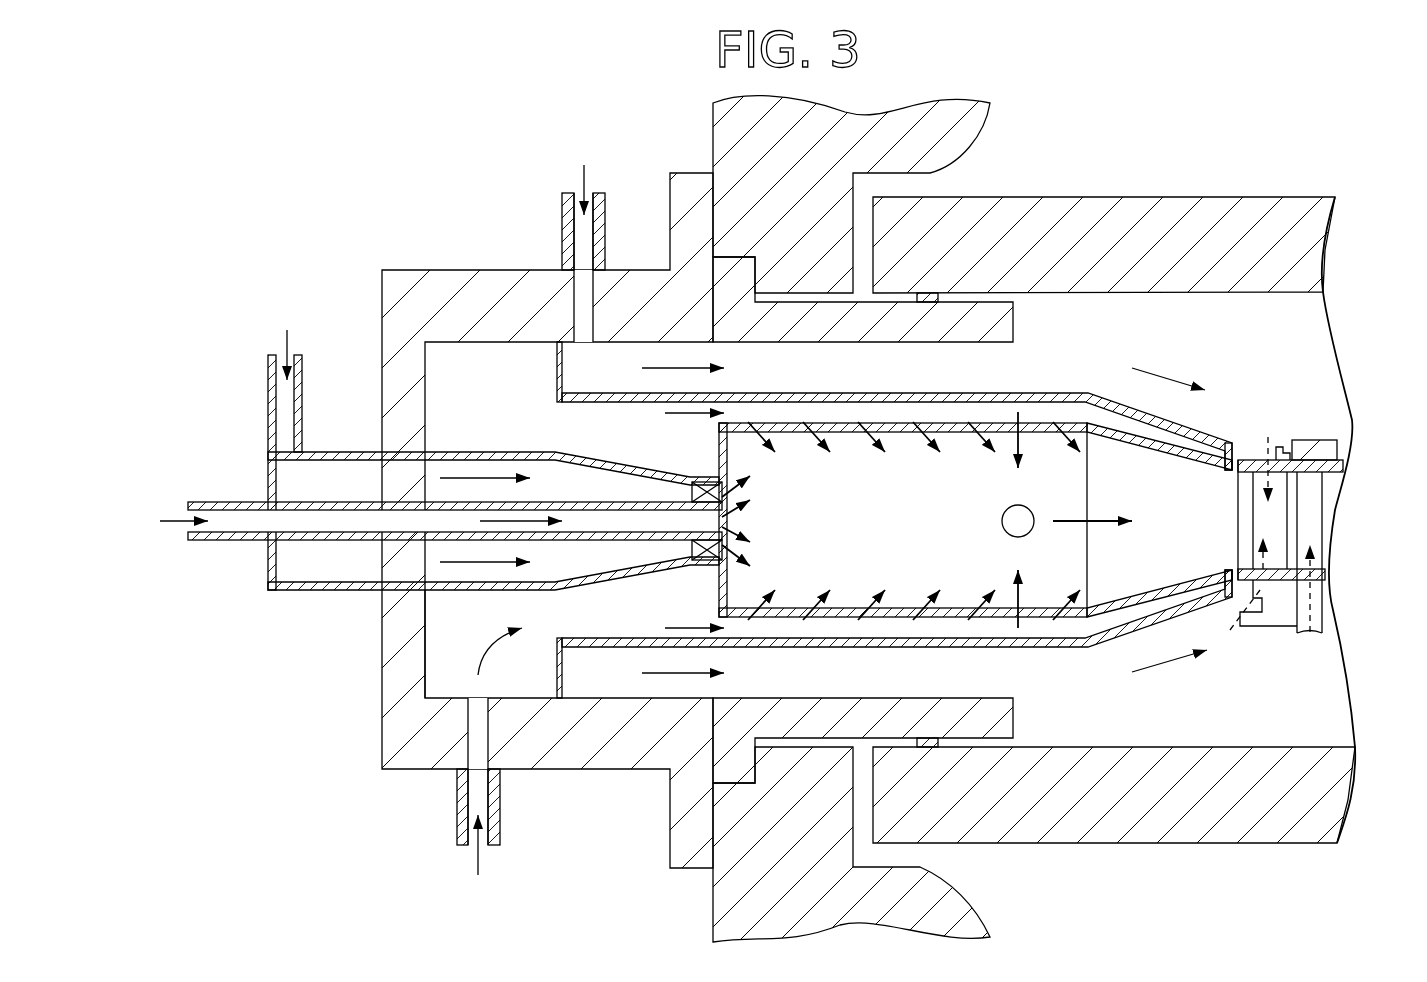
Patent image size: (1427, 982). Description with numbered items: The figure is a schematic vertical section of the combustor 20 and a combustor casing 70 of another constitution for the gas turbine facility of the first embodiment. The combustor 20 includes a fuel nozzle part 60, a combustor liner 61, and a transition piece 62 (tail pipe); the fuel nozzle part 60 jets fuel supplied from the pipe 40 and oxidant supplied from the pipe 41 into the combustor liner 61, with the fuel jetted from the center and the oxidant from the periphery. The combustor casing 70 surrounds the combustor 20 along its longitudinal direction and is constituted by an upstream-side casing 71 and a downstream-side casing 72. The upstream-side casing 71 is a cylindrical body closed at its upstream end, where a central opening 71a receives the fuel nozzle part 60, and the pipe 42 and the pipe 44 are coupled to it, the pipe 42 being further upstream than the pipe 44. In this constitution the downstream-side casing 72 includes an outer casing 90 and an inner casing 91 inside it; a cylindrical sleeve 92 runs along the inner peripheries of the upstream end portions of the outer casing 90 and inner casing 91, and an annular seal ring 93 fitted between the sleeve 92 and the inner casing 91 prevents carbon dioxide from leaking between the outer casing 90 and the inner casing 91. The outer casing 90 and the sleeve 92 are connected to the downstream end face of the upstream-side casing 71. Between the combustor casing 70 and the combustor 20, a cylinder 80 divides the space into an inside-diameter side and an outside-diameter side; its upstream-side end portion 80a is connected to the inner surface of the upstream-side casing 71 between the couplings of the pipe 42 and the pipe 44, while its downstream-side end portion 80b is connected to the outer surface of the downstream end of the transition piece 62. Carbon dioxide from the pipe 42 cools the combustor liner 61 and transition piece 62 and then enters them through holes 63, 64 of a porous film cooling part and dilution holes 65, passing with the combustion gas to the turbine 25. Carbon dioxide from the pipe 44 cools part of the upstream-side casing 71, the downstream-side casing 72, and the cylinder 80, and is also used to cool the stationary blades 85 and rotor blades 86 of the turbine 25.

The combustor casing 70 is at (1147, 118).
The downstream-side casing 72 is at (992, 135).
The outer casing 90 is at (930, 152).
The inner casing 91 is at (1025, 205).
The cylindrical sleeve 92 is at (993, 318).
The annular seal ring 93 is at (930, 302).
The upstream-side casing 71 is at (487, 283).
The opening 71a is at (403, 590).
The pipe 44 is at (563, 237).
The pipe 41 is at (266, 412).
The pipe 42 is at (458, 805).
The pipe 40 is at (230, 540).
The fuel nozzle part 60 is at (635, 583).
The combustor liner 61 is at (985, 617).
The transition piece 62 is at (1200, 590).
The holes of porous film cooling part 63 is at (1062, 617).
The holes of porous film cooling part 64 is at (1115, 612).
The dilution holes 65 is at (1002, 520).
The combustor 20 is at (700, 440).
The cylinder 80 is at (605, 403).
The upstream-side end portion 80a is at (553, 345).
The downstream-side end portion 80b is at (1240, 445).
The turbine 25 is at (1298, 432).
The stationary blades 85 is at (1278, 511).
The rotor blades 86 is at (1312, 536).